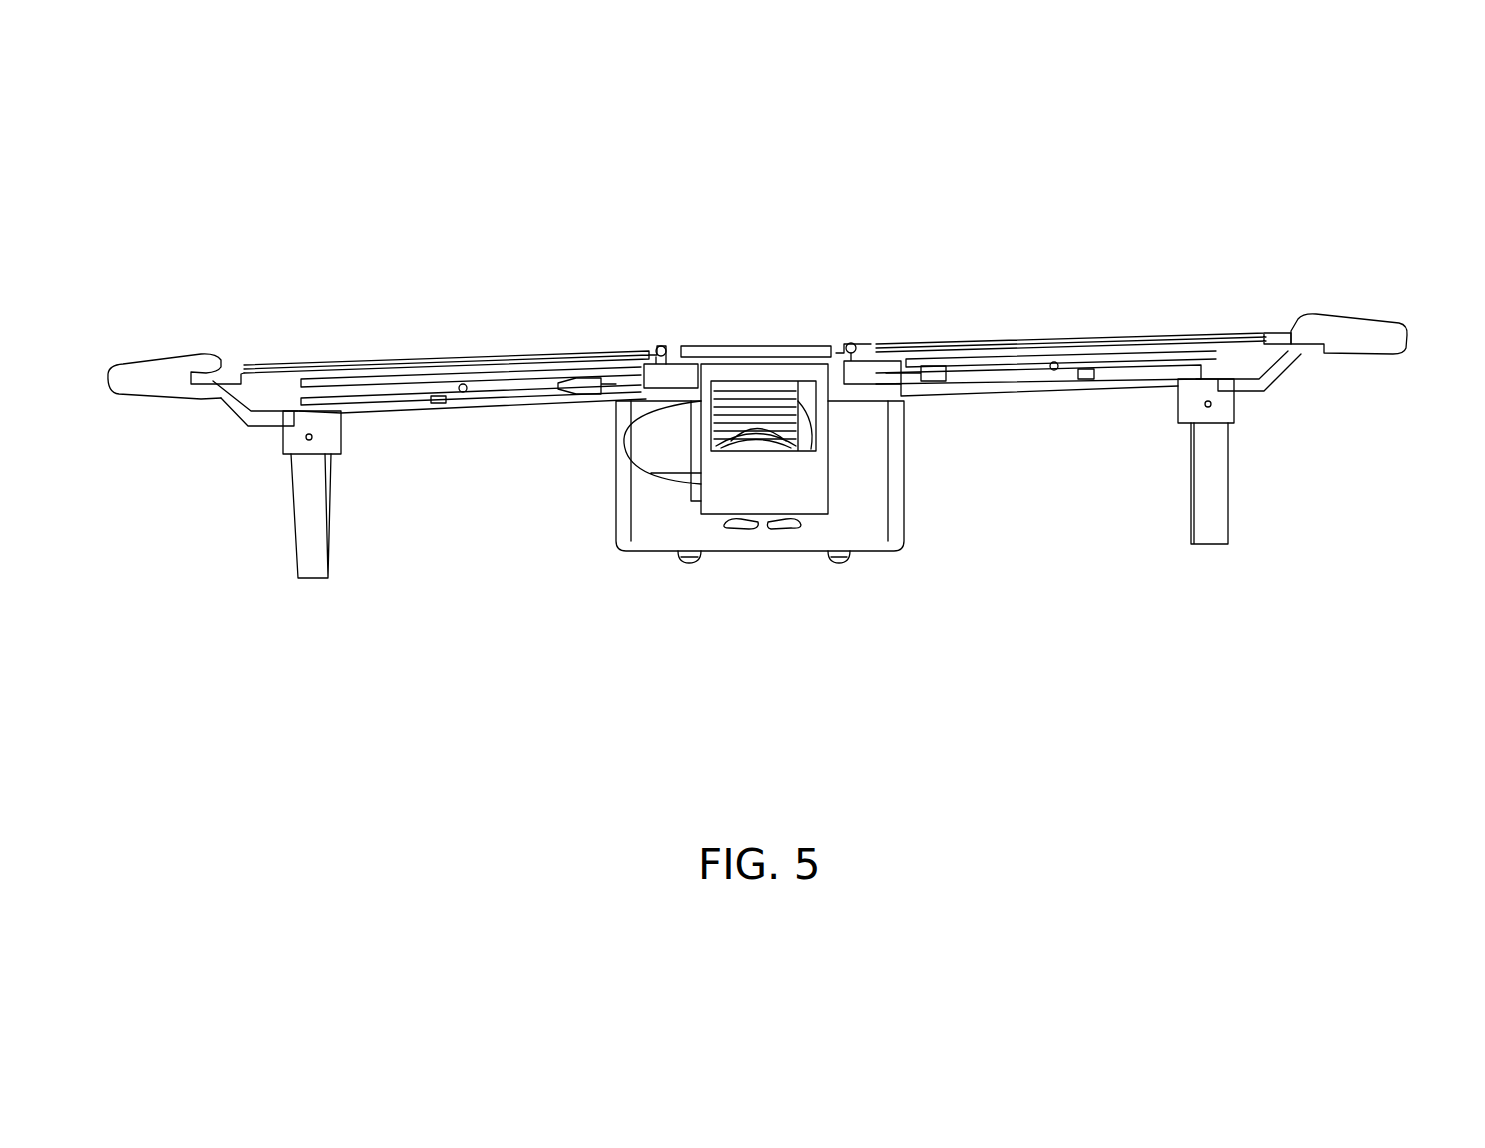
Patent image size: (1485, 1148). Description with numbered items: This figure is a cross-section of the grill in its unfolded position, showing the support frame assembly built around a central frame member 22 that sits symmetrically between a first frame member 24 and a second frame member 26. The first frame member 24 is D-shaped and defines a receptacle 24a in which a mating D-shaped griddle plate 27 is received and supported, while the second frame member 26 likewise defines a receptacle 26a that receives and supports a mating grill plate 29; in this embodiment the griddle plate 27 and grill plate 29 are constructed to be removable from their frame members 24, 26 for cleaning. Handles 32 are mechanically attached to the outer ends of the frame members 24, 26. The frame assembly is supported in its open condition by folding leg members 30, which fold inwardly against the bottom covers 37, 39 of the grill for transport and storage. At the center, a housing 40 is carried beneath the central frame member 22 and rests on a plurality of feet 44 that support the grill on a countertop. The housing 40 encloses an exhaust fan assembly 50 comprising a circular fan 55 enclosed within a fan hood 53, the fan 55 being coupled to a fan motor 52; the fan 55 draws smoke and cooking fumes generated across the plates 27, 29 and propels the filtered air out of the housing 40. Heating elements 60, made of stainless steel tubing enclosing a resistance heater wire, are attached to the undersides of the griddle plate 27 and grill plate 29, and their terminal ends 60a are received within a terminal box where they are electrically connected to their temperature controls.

The central frame member 22 is at (680, 357).
The first frame member 24 is at (228, 366).
The receptacle 24a is at (267, 381).
The second frame member 26 is at (1283, 340).
The receptacle 26a is at (1238, 347).
The griddle plate 27 is at (311, 378).
The grill plate 29 is at (922, 353).
The leg members 30 is at (317, 560).
The handles 32 is at (160, 366).
The bottom cover 37 is at (527, 400).
The bottom cover 39 is at (1013, 385).
The housing 40 is at (897, 470).
The feet 44 is at (683, 562).
The exhaust fan assembly 50 is at (743, 489).
The fan motor 52 is at (655, 470).
The fan hood 53 is at (807, 477).
The circular fan 55 is at (760, 450).
The heating elements 60 is at (397, 382).
The terminal ends 60a is at (607, 383).